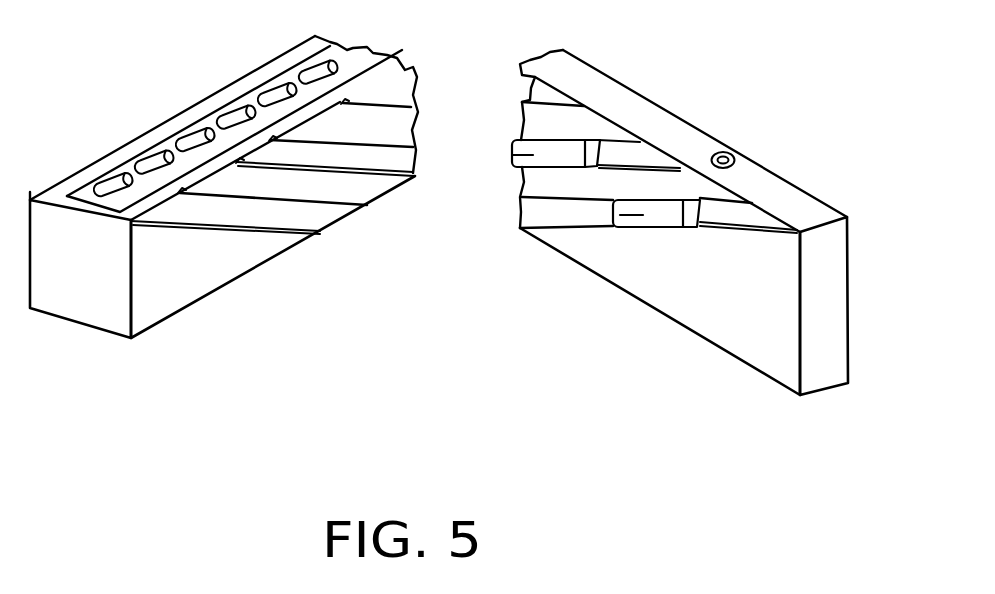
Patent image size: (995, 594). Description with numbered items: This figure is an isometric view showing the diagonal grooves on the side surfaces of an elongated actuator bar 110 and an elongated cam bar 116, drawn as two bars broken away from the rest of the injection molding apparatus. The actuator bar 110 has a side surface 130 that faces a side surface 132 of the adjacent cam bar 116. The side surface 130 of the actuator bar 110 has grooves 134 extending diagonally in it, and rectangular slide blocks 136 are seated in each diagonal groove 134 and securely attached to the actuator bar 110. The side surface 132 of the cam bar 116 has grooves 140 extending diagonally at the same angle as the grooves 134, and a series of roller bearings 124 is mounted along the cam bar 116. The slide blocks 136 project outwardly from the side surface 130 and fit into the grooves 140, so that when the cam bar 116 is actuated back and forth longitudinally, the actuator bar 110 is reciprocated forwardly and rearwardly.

The elongated actuator bar 110 is at (836, 291).
The elongated cam bar 116 is at (80, 298).
The roller bearings 124 is at (196, 136).
The side surface 130 is at (697, 307).
The side surface 132 is at (183, 273).
The grooves 134 is at (650, 147).
The slide blocks 136 is at (532, 155).
The grooves 140 is at (302, 211).